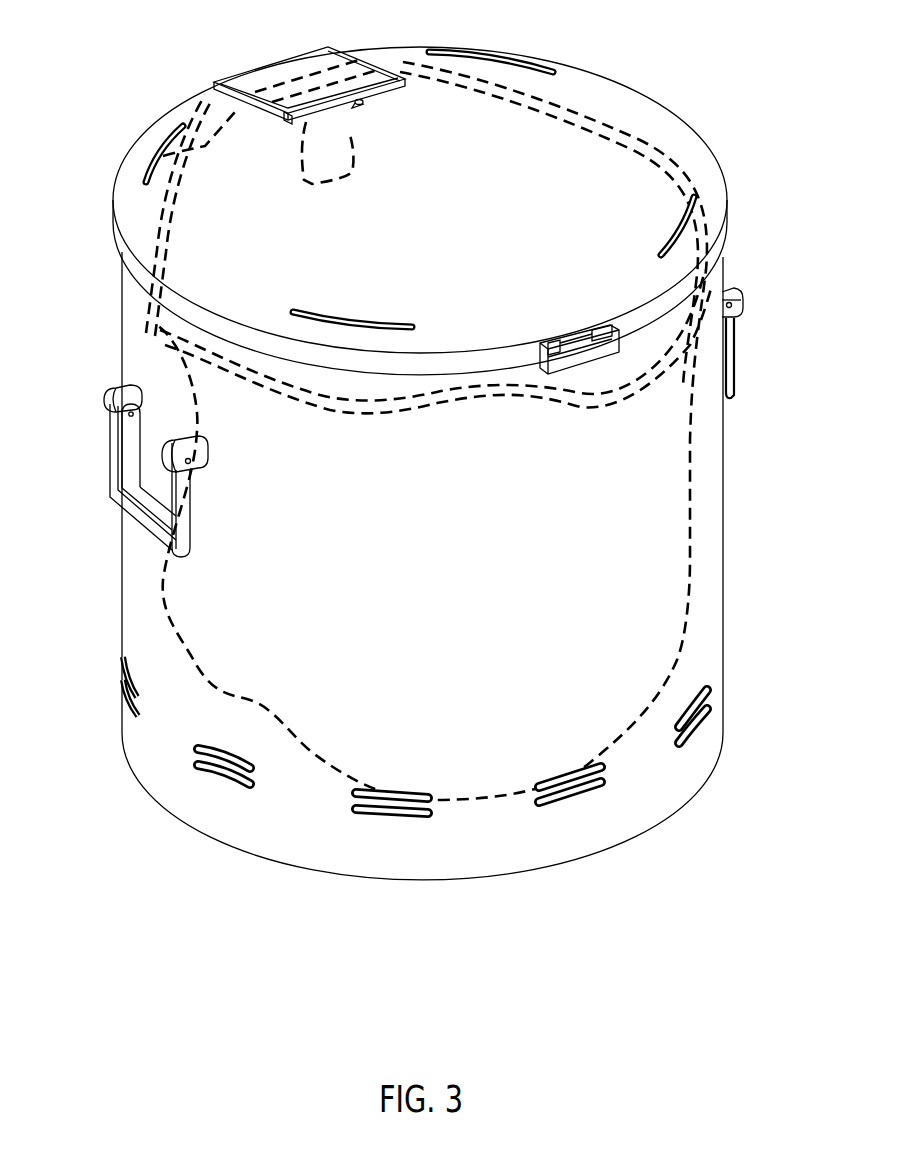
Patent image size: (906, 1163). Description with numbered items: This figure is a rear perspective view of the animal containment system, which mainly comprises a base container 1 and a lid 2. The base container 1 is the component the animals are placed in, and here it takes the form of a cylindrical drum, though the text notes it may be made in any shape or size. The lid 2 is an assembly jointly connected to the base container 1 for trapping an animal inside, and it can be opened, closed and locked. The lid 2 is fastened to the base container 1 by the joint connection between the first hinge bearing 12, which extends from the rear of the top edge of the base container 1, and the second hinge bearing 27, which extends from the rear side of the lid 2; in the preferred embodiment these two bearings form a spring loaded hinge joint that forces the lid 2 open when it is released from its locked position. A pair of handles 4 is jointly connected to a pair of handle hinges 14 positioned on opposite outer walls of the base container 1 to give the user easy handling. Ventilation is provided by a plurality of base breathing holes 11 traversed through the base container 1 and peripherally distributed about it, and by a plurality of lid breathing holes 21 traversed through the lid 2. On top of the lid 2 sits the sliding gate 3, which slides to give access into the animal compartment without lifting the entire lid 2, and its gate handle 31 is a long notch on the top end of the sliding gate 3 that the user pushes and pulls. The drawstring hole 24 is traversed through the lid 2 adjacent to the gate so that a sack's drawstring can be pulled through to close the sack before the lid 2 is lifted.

The base container 1 is at (124, 289).
The lid 2 is at (611, 84).
The sliding gate 3 is at (321, 62).
The pair of handles 4 is at (732, 370).
The plurality of base breathing holes 11 is at (130, 680).
The first hinge bearing 12 is at (613, 345).
The pair of handle hinges 14 is at (138, 386).
The plurality of lid breathing holes 21 is at (148, 163).
The drawstring hole 24 is at (361, 104).
The second hinge bearing 27 is at (578, 337).
The gate handle 31 is at (289, 114).